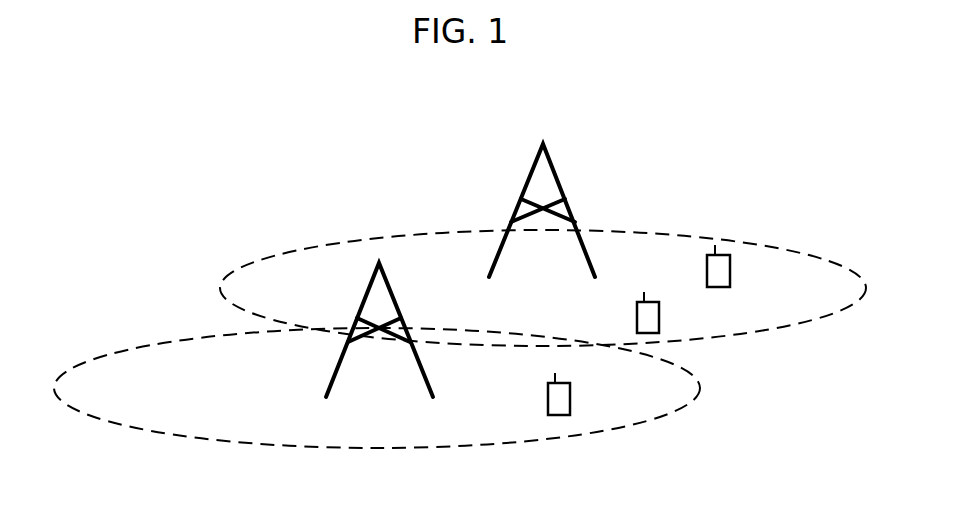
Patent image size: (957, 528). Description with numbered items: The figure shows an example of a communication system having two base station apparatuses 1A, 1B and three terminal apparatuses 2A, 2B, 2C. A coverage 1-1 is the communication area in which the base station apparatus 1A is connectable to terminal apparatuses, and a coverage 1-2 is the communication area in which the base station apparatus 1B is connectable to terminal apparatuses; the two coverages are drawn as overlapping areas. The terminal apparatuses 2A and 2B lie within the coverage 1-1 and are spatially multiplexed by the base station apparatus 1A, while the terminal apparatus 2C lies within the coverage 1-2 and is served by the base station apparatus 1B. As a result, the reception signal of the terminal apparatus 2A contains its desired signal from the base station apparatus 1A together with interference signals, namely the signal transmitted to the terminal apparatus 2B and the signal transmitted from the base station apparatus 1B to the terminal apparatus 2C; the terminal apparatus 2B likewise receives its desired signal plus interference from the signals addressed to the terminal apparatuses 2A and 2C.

The coverage 1-1 is at (307, 251).
The coverage 1-2 is at (163, 344).
The base station apparatus 1A is at (534, 158).
The base station apparatus 1B is at (366, 293).
The terminal apparatus 2A is at (731, 262).
The terminal apparatus 2B is at (660, 308).
The terminal apparatus 2C is at (571, 390).